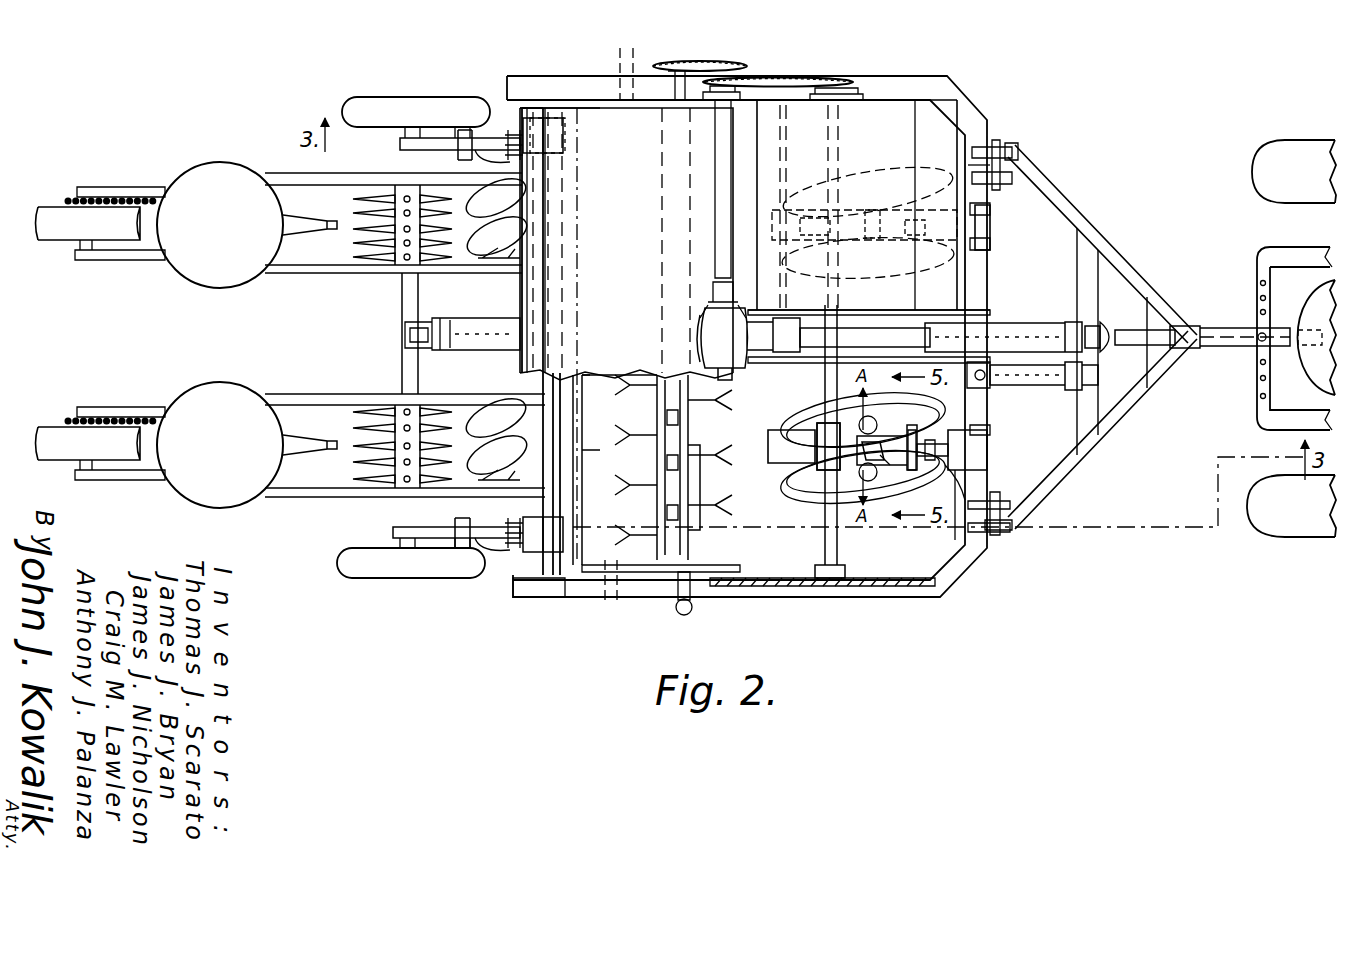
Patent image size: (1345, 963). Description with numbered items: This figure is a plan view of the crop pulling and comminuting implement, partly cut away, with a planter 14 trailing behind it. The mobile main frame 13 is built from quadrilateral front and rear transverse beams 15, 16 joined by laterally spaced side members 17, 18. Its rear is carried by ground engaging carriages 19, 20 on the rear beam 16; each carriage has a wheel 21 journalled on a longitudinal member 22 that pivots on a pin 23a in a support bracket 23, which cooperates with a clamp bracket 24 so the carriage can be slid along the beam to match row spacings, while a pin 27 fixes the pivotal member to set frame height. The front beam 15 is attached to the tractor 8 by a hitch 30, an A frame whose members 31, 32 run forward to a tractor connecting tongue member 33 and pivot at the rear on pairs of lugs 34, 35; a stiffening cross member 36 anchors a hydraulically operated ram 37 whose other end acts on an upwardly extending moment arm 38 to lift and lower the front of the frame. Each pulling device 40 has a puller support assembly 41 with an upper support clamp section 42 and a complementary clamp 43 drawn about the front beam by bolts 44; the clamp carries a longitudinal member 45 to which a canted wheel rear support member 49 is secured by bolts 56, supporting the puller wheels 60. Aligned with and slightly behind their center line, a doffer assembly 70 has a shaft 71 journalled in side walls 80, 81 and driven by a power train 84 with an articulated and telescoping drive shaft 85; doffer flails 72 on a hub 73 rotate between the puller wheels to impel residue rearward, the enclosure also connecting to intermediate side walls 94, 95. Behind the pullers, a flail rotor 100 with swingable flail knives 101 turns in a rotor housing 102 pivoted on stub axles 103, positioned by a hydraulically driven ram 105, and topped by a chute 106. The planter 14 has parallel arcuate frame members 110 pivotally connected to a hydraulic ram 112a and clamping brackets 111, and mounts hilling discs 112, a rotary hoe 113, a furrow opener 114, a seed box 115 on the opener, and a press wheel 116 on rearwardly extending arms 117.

The tractor 8 is at (1262, 245).
The main frame 13 is at (852, 597).
The planter 14 is at (220, 305).
The front transverse beam 15 is at (935, 460).
The rear transverse beam 16 is at (530, 578).
The side member 17 is at (908, 597).
The side member 18 is at (928, 90).
The ground engaging carriage 19 is at (393, 533).
The ground engaging carriage 20 is at (448, 151).
The wheel 21 is at (376, 100).
The longitudinal member 22 is at (400, 144).
The support bracket 23 is at (470, 130).
The pin 23a is at (512, 130).
The clamp bracket 24 is at (548, 118).
The pin 27 is at (494, 350).
The hitch 30 is at (1102, 337).
The A frame member 31 is at (1130, 420).
The A frame member 32 is at (1085, 222).
The tractor connecting tongue member 33 is at (1170, 325).
The lugs 34 is at (1003, 530).
The lugs 35 is at (1015, 150).
The stiffening cross member 36 is at (1095, 440).
The hydraulically operated ram 37 is at (1030, 385).
The moment arm 38 is at (985, 385).
The pulling device 40 is at (970, 150).
The puller support assembly 41 is at (972, 530).
The upper support clamp section 42 is at (930, 465).
The complementary clamp 43 is at (992, 225).
The bolts 44 is at (988, 210).
The longitudinal member 45 is at (940, 225).
The wheel rear support member 49 is at (893, 465).
The bolts 56 is at (960, 458).
The puller wheels 60 is at (812, 420).
The doffer assembly 70 is at (850, 200).
The shaft 71 is at (825, 545).
The doffer flails 72 is at (812, 245).
The hub 73 is at (832, 470).
The side wall 80 is at (760, 590).
The side wall 81 is at (808, 98).
The power train 84 is at (725, 130).
The articulated and telescoping drive shaft 85 is at (1042, 330).
The intermediate side wall 94 is at (950, 310).
The intermediate side wall 95 is at (785, 368).
The flail rotor 100 is at (668, 560).
The swingable flail knives 101 is at (625, 415).
The rotor housing 102 is at (642, 255).
The stub axles 103 is at (600, 625).
The hydraulically driven ram 105 is at (695, 612).
The chute 106 is at (585, 110).
The arcuate frame members 110 is at (278, 173).
The clamping brackets 111 is at (520, 470).
The hilling discs 112 is at (510, 237).
The hydraulic ram 112a is at (405, 325).
The rotary hoe 113 is at (405, 482).
The furrow opener 114 is at (295, 232).
The seed box 115 is at (238, 238).
The press wheel 116 is at (42, 207).
The rearwardly extending arms 117 is at (110, 187).